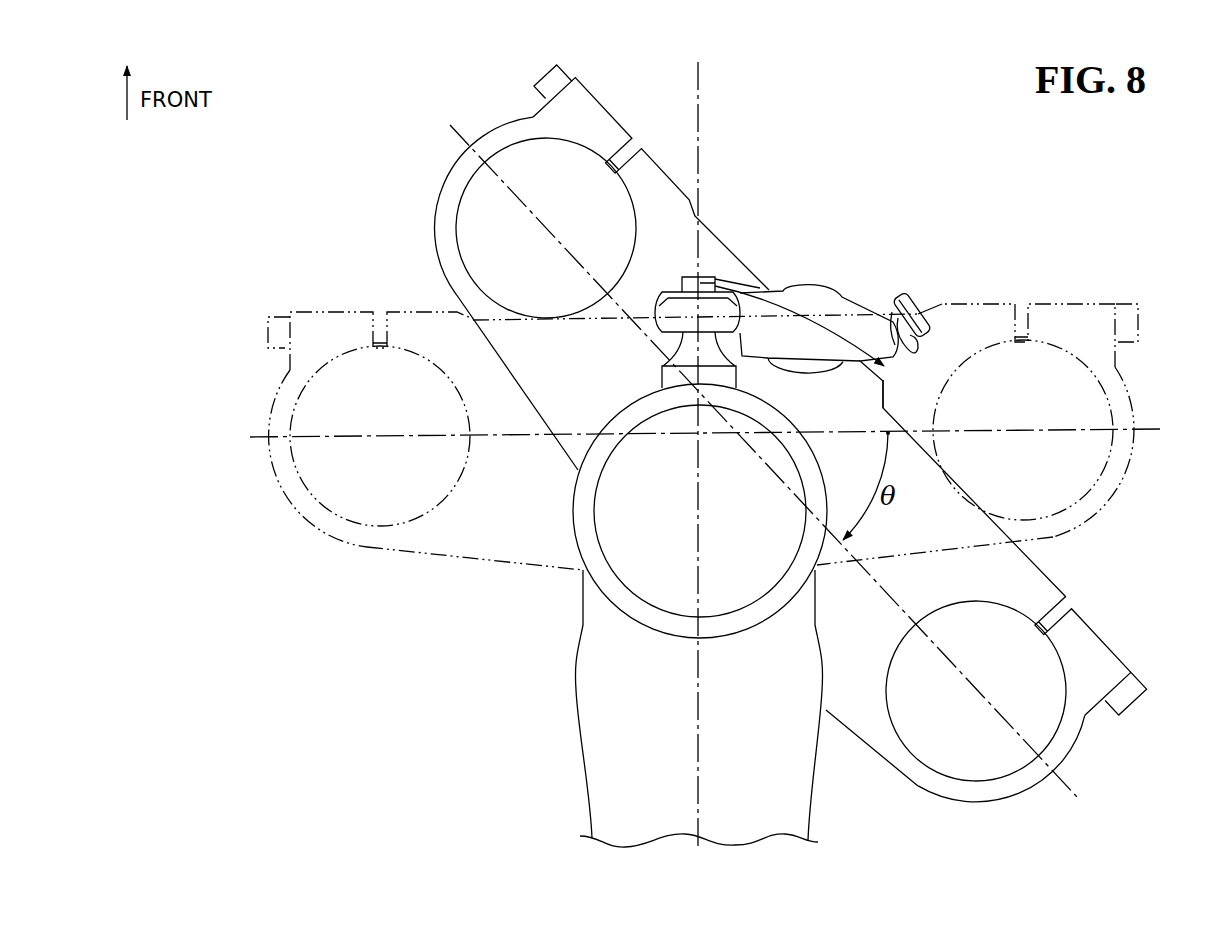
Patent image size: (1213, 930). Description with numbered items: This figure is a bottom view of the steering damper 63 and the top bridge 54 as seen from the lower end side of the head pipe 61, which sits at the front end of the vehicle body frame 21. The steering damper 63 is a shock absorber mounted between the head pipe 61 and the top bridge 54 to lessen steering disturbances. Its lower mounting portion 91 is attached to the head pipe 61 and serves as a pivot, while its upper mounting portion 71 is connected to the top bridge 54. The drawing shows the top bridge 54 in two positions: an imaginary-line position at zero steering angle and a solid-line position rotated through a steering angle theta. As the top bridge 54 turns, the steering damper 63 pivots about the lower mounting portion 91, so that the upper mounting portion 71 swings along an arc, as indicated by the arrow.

The top bridge 54 is at (336, 311).
The head pipe 61 is at (617, 592).
The vehicle body frame 21 is at (602, 747).
The lower mounting portion 91 is at (657, 290).
The steering damper 63 is at (833, 285).
The upper mounting portion 71 is at (920, 357).